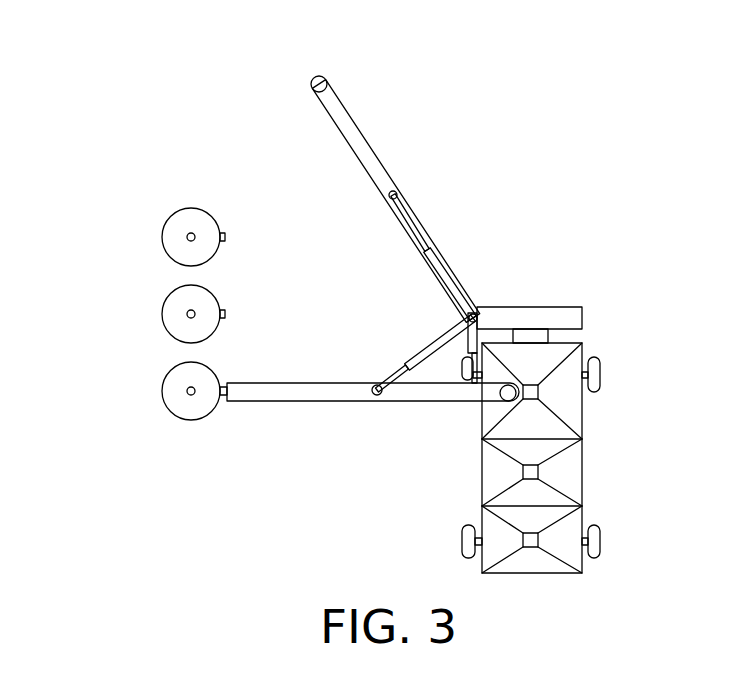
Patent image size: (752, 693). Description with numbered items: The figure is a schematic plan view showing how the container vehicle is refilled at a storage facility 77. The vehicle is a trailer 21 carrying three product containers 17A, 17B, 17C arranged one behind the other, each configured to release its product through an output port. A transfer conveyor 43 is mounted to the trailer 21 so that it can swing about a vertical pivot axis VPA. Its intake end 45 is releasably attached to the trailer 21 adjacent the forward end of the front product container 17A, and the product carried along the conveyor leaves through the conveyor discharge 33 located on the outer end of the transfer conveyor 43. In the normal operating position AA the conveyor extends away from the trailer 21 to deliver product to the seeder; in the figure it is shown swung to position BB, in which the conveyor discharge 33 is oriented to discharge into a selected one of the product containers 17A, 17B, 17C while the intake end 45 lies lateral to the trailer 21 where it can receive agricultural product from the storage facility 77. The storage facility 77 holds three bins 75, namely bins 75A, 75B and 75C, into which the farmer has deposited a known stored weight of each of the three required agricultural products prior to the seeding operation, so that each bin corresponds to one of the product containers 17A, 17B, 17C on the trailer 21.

The trailer 21 is at (583, 573).
The front product container 17A is at (583, 351).
The product container 17B is at (583, 468).
The product container 17C is at (583, 520).
The conveyor discharge 33 is at (325, 76).
The transfer conveyor 43 is at (372, 146).
The intake end 45 is at (477, 306).
The bins 75 is at (135, 391).
The bin 75A is at (162, 391).
The bin 75B is at (162, 314).
The bin 75C is at (190, 208).
The storage facility 77 is at (154, 220).
The normal operating position AA is at (352, 112).
The position BB is at (262, 382).
The vertical pivot axis VPA is at (396, 191).